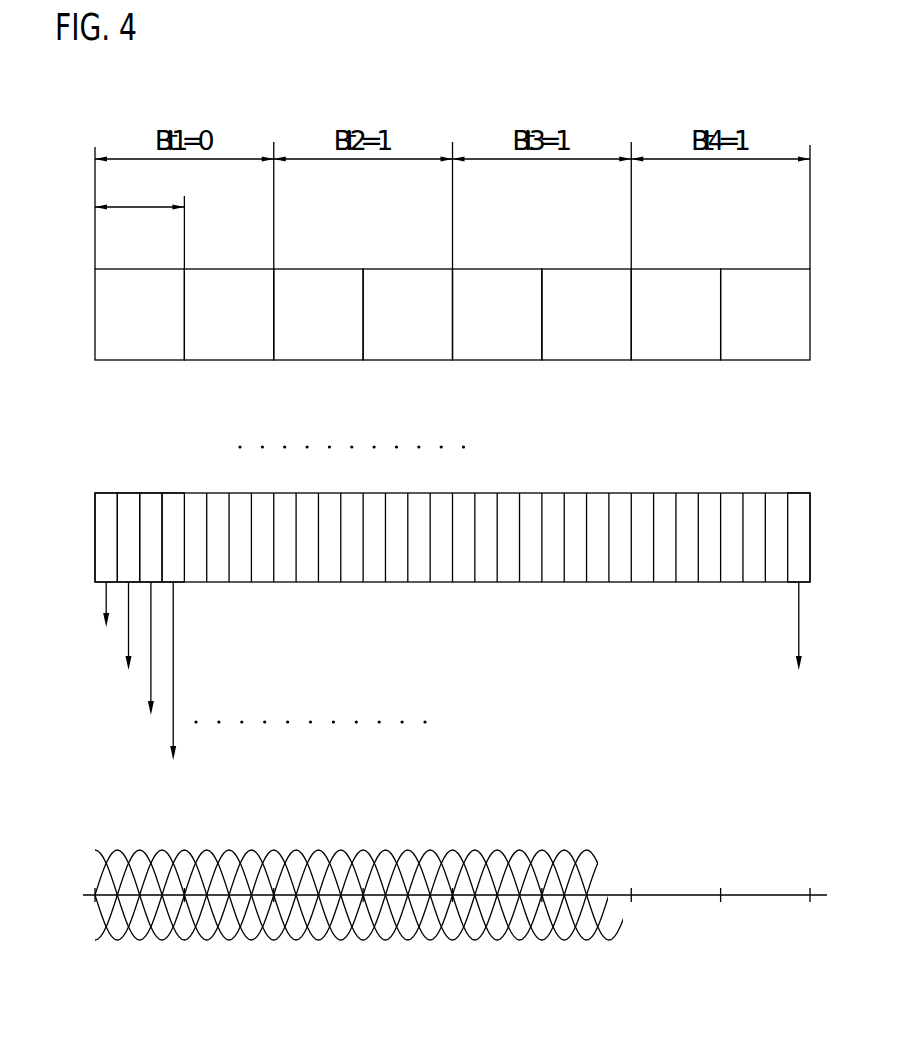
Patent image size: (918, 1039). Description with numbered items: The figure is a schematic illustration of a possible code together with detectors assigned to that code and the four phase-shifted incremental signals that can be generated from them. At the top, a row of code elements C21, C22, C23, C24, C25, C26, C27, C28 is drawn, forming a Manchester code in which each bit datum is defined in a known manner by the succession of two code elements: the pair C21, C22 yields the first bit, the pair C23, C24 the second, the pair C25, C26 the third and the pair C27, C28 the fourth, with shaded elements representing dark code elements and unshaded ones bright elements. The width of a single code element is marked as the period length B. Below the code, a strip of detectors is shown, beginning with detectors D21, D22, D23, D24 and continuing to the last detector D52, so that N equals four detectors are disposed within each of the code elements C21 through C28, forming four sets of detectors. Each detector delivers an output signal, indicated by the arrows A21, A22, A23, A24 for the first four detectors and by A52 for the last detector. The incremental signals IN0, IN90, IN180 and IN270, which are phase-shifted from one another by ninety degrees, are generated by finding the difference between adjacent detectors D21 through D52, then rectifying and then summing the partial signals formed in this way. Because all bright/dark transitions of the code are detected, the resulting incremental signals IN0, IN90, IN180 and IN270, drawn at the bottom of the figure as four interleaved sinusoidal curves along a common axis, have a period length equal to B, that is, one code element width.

The period length B is at (139, 223).
The code element C21 is at (137, 344).
The code element C22 is at (227, 344).
The code element C23 is at (316, 344).
The code element C24 is at (405, 344).
The code element C25 is at (495, 344).
The code element C26 is at (584, 344).
The code element C27 is at (674, 344).
The code element C28 is at (763, 344).
The detector D21 is at (102, 505).
The detector D22 is at (130, 500).
The detector D23 is at (153, 505).
The detector D24 is at (173, 505).
The detector D52 is at (798, 507).
The detector output signal A21 is at (105, 590).
The detector output signal A22 is at (128, 633).
The detector output signal A23 is at (150, 677).
The detector output signal A24 is at (173, 722).
The detector output signal A52 is at (797, 595).
The incremental signal IN0 is at (590, 940).
The incremental signal IN90 is at (559, 850).
The incremental signal IN180 is at (592, 855).
The incremental signal IN270 is at (562, 940).